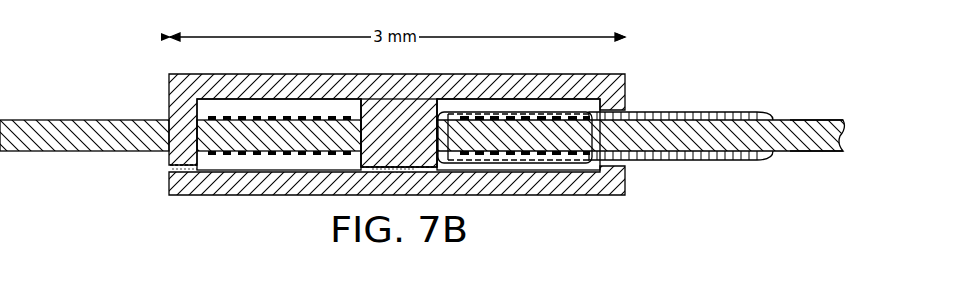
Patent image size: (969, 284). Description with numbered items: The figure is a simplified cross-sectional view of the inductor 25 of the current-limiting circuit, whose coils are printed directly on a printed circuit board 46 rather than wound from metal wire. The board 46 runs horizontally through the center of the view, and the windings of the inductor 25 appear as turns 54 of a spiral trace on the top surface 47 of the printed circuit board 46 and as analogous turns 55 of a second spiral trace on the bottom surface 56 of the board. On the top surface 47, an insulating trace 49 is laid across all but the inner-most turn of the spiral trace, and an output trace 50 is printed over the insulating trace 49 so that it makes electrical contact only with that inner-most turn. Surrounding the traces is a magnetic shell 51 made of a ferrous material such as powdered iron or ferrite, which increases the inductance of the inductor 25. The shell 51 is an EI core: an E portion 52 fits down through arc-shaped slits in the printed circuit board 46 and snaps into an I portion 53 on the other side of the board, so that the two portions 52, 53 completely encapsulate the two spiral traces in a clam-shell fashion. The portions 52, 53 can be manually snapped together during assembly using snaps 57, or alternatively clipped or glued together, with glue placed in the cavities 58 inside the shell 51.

The inductor 25 is at (431, 119).
The printed circuit board 46 is at (650, 142).
The top surface 47 is at (826, 119).
The insulating trace 49 is at (574, 118).
The output trace 50 is at (690, 112).
The magnetic shell 51 is at (168, 172).
The E portion 52 is at (388, 140).
The I portion 53 is at (478, 193).
The turns 54 is at (257, 116).
The turns 55 is at (298, 156).
The bottom surface 56 is at (826, 153).
The snaps 57 is at (383, 170).
The cavities 58 is at (318, 108).